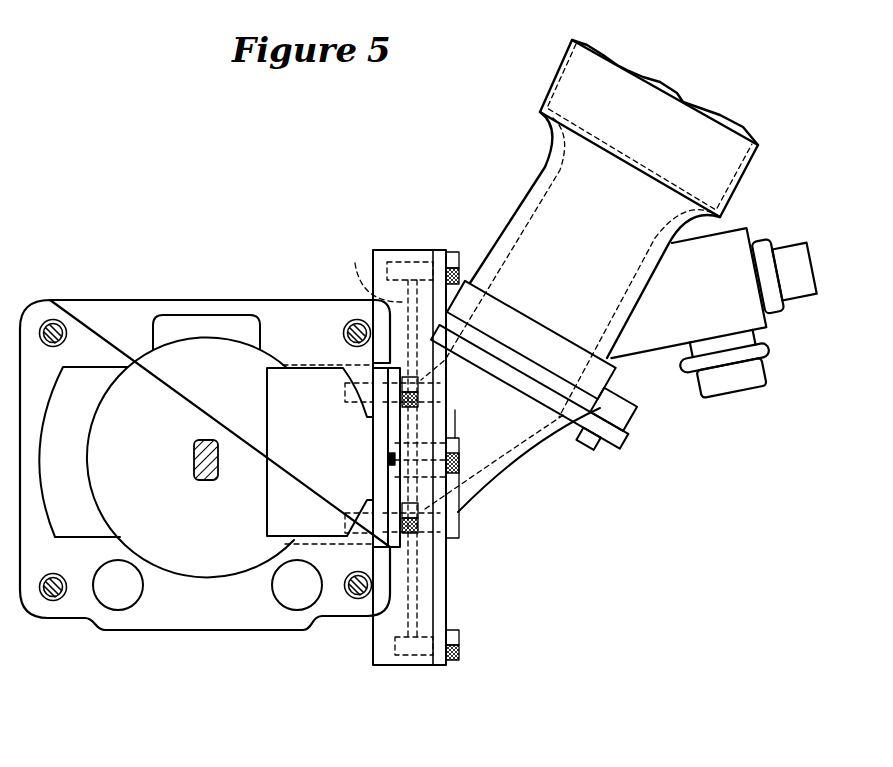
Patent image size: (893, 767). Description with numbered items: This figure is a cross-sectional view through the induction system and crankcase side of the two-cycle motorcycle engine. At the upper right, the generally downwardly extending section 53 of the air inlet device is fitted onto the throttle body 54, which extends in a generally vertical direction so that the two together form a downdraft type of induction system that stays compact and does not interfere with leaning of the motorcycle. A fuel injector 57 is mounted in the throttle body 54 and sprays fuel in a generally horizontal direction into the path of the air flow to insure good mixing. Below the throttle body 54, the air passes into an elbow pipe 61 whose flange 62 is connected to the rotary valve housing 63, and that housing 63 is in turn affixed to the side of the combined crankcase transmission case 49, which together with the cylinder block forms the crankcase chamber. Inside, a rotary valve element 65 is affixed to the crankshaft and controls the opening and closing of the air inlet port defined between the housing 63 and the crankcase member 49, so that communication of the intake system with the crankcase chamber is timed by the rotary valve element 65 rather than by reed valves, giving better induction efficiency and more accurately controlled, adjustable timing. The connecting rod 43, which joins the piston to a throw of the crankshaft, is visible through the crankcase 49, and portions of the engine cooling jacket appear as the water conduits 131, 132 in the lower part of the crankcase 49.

The connecting rod 43 is at (193, 458).
The combined crankcase transmission case 49 is at (187, 607).
The downwardly extending section 53 is at (555, 85).
The throttle body 54 is at (515, 218).
The fuel injector 57 is at (773, 298).
The elbow pipe 61 is at (528, 476).
The flange 62 is at (440, 574).
The rotary valve housing 63 is at (383, 655).
The rotary valve element 65 is at (356, 266).
The water conduit 131 is at (117, 594).
The water conduit 132 is at (296, 600).